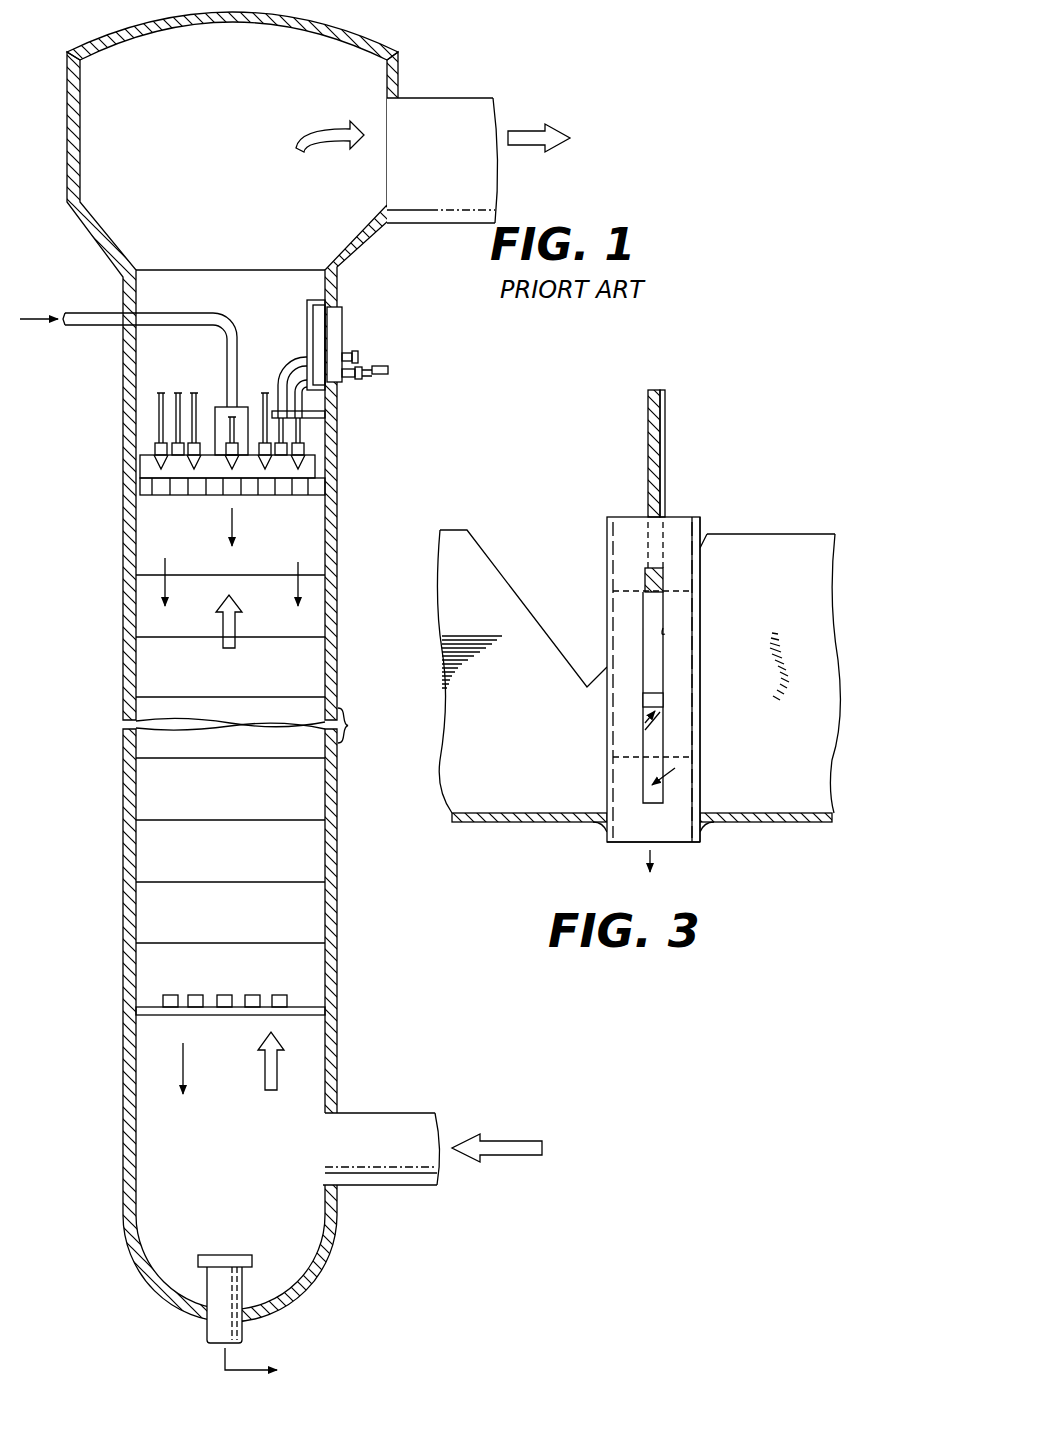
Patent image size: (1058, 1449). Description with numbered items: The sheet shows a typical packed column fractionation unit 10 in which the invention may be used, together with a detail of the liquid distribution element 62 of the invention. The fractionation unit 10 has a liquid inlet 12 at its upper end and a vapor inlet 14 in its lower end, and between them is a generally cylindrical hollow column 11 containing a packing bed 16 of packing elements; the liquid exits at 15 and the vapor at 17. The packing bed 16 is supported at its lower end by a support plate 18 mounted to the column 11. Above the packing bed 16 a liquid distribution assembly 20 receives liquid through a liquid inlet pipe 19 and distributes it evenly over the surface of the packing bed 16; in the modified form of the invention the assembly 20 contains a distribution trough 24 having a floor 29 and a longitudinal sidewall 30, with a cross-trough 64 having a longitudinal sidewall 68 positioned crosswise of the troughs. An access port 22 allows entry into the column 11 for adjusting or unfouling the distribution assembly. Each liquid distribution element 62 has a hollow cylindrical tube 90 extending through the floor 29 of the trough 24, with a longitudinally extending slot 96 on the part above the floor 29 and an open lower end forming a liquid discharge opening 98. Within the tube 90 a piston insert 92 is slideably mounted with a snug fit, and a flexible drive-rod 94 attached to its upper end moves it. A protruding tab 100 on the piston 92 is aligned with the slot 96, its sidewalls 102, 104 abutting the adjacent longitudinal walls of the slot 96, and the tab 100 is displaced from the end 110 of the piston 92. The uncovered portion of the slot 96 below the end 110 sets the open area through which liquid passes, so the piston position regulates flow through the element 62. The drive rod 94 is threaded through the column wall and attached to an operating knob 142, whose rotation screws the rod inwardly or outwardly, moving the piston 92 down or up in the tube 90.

In FIG. 1, the packed column fractionation unit 10 is at (362, 478).
In FIG. 1, the hollow column 11 is at (128, 688).
In FIG. 1, the liquid inlet 12 is at (82, 313).
In FIG. 1, the vapor inlet 14 is at (405, 1113).
In FIG. 1, the liquid exit 15 is at (207, 1332).
In FIG. 1, the packing bed 16 is at (153, 803).
In FIG. 1, the vapor exit 17 is at (456, 98).
In FIG. 1, the support plate 18 is at (315, 1013).
In FIG. 1, the liquid inlet pipe 19 is at (235, 333).
In FIG. 1, the liquid distribution assembly 20 is at (141, 468).
In FIG. 1, the access port 22 is at (338, 320).
In FIG. 3, the distribution trough 24 is at (518, 567).
In FIG. 3, the floor 29 is at (485, 822).
In FIG. 3, the longitudinal sidewall 30 is at (512, 762).
In FIG. 3, the liquid distribution element 62 is at (704, 516).
In FIG. 1, the cross-trough 64 is at (218, 405).
In FIG. 1, the longitudinal sidewall 68 is at (249, 415).
In FIG. 3, the hollow cylindrical tube 90 is at (703, 573).
In FIG. 3, the piston insert 92 is at (653, 607).
In FIG. 1, the flexible drive-rod 94 is at (165, 418).
In FIG. 3, the flexible drive-rod 94 is at (665, 438).
In FIG. 3, the slot 96 is at (665, 632).
In FIG. 3, the liquid discharge opening 98 is at (628, 843).
In FIG. 3, the protruding tab 100 is at (648, 720).
In FIG. 3, the tab sidewall 102 is at (665, 700).
In FIG. 3, the tab sidewall 104 is at (643, 700).
In FIG. 3, the end of the piston 110 is at (655, 782).
In FIG. 1, the operating knob 142 is at (356, 356).